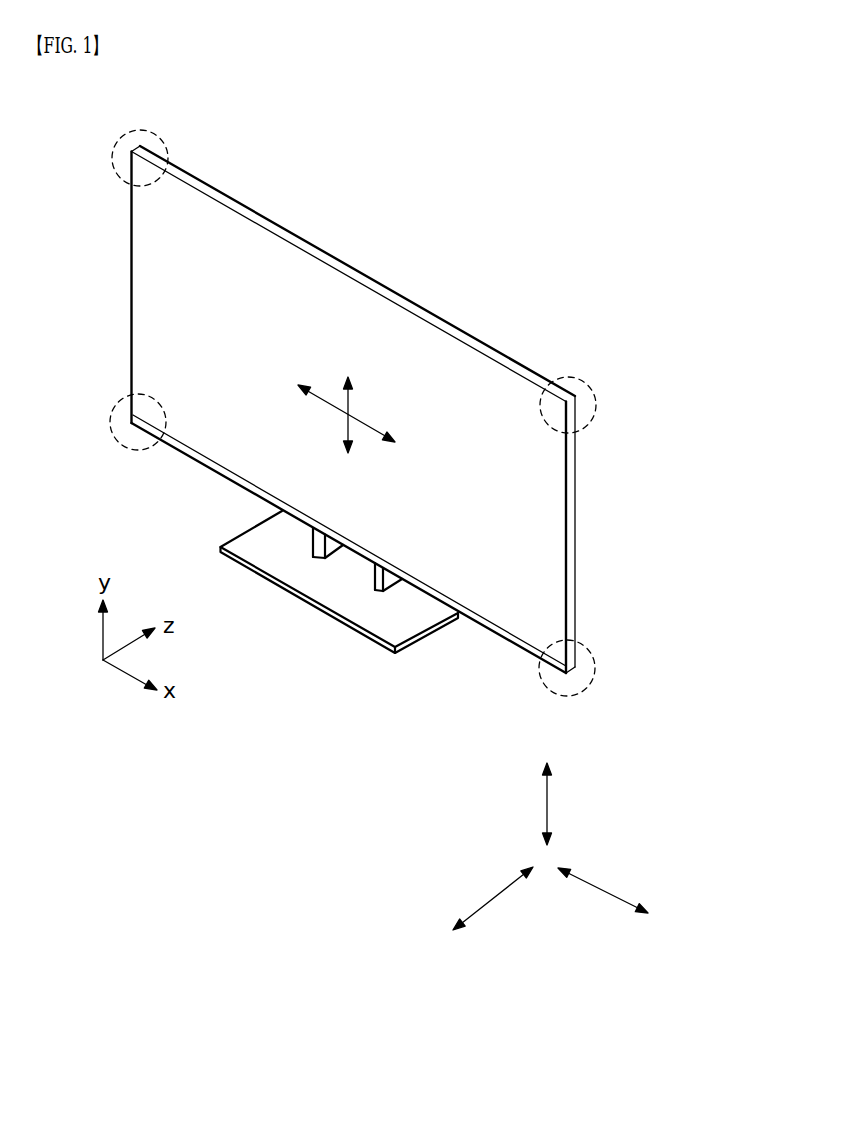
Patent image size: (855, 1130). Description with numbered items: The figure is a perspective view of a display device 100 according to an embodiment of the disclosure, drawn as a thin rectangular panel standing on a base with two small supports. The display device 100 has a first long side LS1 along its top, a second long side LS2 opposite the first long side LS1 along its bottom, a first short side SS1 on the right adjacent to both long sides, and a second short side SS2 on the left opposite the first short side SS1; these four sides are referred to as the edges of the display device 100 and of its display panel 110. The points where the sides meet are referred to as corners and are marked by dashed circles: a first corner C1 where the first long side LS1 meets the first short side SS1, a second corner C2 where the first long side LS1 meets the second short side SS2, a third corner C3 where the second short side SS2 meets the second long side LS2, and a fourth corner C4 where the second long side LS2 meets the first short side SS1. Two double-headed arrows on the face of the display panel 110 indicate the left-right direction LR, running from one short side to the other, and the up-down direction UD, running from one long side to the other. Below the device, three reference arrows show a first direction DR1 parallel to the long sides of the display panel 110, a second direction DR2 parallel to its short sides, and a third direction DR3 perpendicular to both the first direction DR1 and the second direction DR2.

The display device 100 is at (351, 413).
The display panel 110 is at (351, 413).
The first short side SS1 is at (558, 540).
The second short side SS2 is at (131, 283).
The first long side LS1 is at (460, 338).
The second long side LS2 is at (218, 476).
The first corner C1 is at (584, 405).
The second corner C2 is at (128, 158).
The third corner C3 is at (126, 422).
The fourth corner C4 is at (584, 668).
The up-down direction UD is at (348, 399).
The left-right direction LR is at (362, 422).
The first direction DR1 is at (625, 900).
The second direction DR2 is at (545, 790).
The third direction DR3 is at (479, 914).